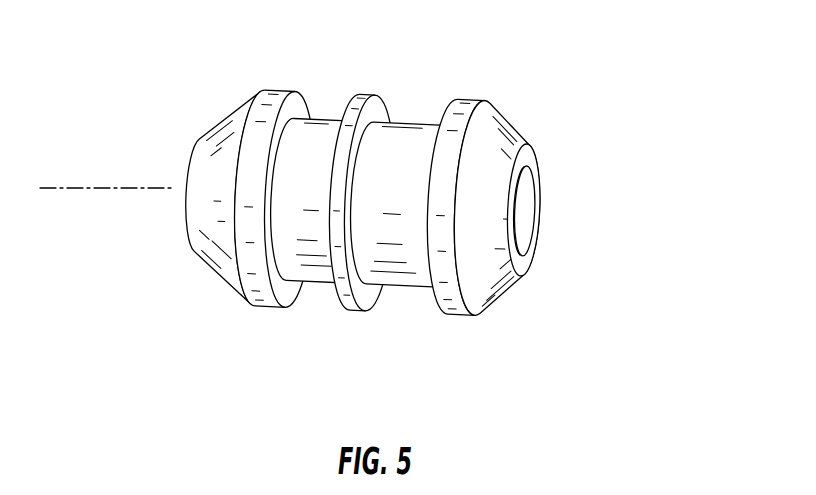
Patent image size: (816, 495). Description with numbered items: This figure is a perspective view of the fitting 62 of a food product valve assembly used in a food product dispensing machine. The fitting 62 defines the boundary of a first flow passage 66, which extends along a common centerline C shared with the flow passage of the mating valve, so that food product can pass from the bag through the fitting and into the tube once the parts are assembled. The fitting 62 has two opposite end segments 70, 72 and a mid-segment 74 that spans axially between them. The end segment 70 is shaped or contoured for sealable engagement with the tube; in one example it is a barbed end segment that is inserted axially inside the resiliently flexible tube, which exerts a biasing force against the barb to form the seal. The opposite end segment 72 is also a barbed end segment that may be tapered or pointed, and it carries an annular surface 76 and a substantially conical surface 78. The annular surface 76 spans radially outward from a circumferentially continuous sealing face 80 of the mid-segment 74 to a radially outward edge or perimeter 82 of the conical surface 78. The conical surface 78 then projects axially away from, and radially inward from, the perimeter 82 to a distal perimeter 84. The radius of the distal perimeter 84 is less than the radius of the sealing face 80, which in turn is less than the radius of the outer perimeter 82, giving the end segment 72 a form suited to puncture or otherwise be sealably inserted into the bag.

The fitting 62 is at (426, 190).
The first flow passage 66 is at (523, 203).
The end segment 70 is at (223, 110).
The opposite end segment 72 is at (535, 200).
The mid-segment 74 is at (370, 167).
The annular surface 76 is at (433, 300).
The conical surface 78 is at (500, 297).
The sealing face 80 is at (418, 122).
The perimeter 82 is at (454, 195).
The distal perimeter 84 is at (537, 262).
The centerline C is at (128, 191).